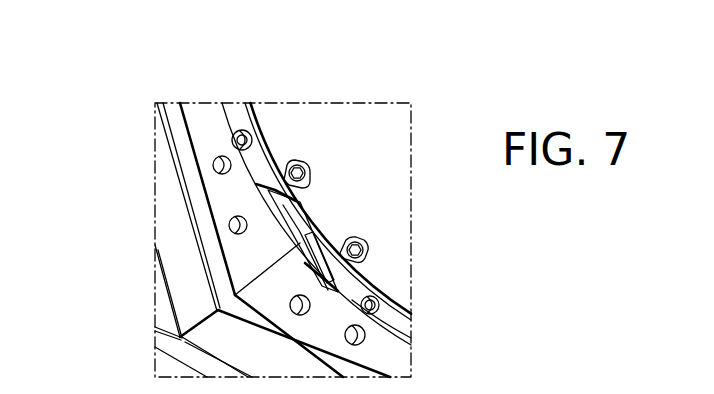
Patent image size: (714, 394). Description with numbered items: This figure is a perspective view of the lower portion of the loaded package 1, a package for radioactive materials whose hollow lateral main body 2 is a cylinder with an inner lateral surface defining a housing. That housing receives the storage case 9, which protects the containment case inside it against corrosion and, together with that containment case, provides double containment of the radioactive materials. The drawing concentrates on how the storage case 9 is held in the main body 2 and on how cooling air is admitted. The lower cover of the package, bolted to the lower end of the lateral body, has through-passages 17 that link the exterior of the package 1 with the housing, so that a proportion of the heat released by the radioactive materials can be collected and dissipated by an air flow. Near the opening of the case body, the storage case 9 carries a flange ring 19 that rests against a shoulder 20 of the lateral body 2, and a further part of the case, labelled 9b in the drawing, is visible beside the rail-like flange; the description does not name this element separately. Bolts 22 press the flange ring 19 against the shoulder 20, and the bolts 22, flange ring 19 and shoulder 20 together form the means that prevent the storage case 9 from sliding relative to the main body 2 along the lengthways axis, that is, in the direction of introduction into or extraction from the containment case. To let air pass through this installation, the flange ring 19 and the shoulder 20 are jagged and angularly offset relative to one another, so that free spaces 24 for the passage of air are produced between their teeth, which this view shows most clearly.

The package 1 is at (168, 91).
The hollow lateral main body 2 is at (164, 315).
The storage case 9 is at (300, 190).
The rail fastening lug 9b is at (294, 153).
The through-passages 17 is at (363, 248).
The flange ring 19 is at (258, 163).
The shoulder 20 is at (316, 177).
The bolts 22 is at (240, 136).
The free spaces 24 is at (298, 220).